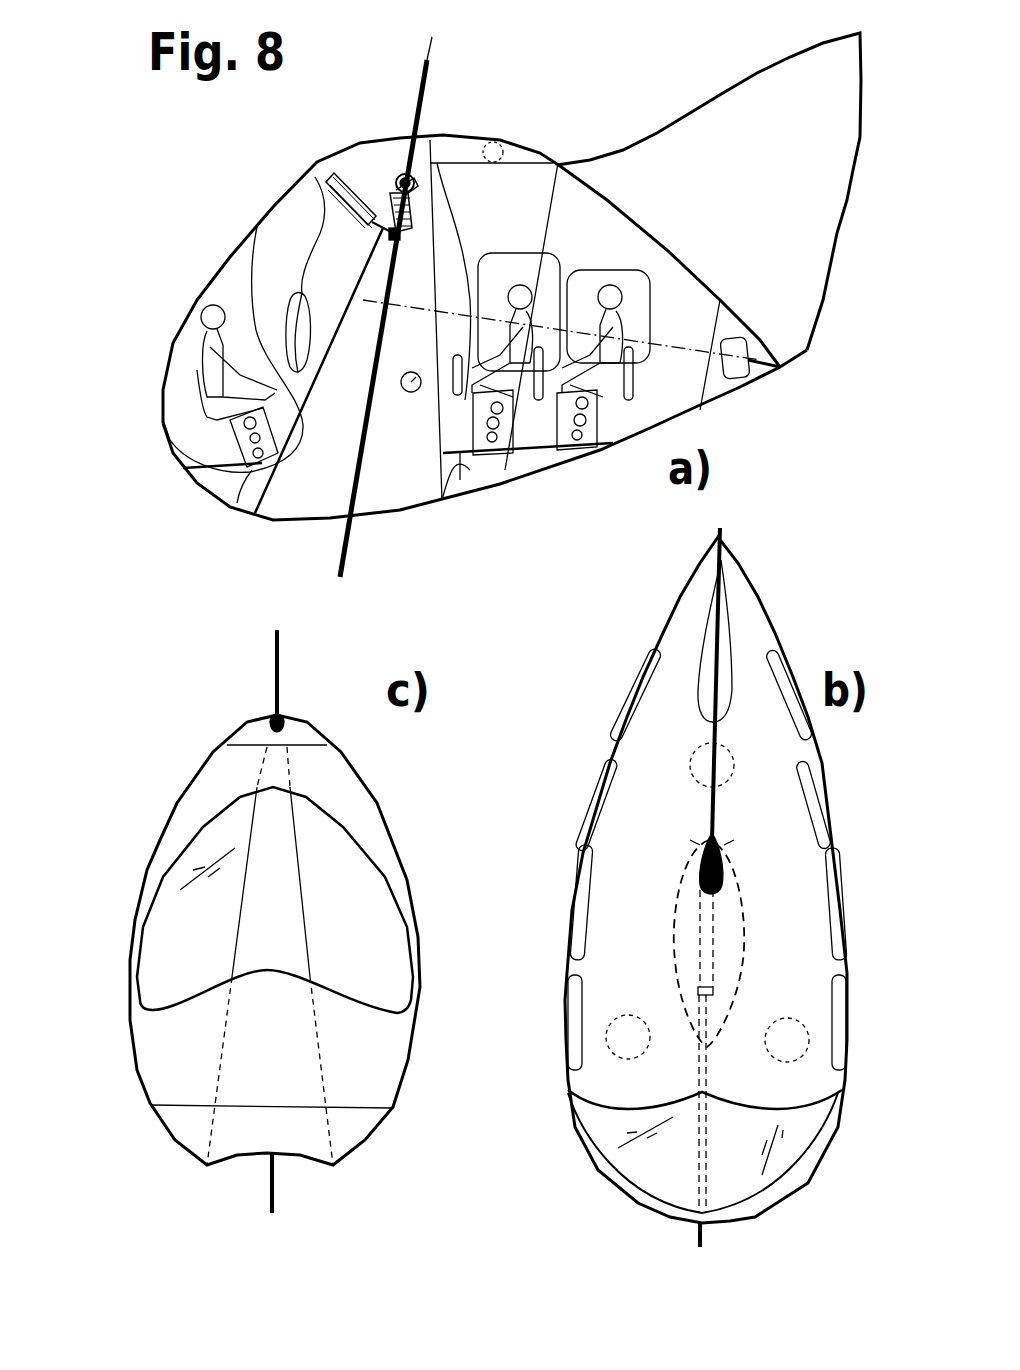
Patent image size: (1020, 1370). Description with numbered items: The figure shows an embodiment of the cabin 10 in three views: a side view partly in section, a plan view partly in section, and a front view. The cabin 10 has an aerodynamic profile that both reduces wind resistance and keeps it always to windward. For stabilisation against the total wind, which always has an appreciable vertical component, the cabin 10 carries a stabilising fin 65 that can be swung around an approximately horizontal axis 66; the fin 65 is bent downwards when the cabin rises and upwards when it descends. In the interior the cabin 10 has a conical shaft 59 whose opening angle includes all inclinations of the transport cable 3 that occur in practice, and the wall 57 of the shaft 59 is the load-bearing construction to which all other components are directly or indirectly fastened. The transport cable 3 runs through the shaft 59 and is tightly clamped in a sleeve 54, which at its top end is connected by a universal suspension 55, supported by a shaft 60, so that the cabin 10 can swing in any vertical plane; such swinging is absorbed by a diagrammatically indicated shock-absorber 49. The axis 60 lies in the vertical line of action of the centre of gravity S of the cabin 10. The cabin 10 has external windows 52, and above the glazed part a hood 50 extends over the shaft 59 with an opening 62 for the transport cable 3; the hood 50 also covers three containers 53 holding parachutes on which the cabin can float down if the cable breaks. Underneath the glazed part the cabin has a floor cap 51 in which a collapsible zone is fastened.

In FIG. 8a, the transport cable 3 is at (345, 515).
In FIG. 8c, the transport cable 3 is at (277, 685).
In FIG. 8a, the cabin 10 is at (273, 210).
In FIG. 8b, the cabin 10 is at (583, 860).
In FIG. 8c, the cabin 10 is at (145, 873).
In FIG. 8a, the shock-absorber 49 is at (333, 177).
In FIG. 8a, the hood 50 is at (510, 150).
In FIG. 8a, the floor cap 51 is at (473, 480).
In FIG. 8a, the external windows 52 is at (177, 387).
In FIG. 8a, the containers 53 is at (495, 147).
In FIG. 8b, the containers 53 is at (637, 1037).
In FIG. 8a, the sleeve 54 is at (397, 213).
In FIG. 8a, the universal suspension 55 is at (400, 200).
In FIG. 8a, the wall of the shaft 57 is at (300, 365).
In FIG. 8a, the conical shaft 59 is at (363, 300).
In FIG. 8b, the conical shaft 59 is at (742, 898).
In FIG. 8c, the conical shaft 59 is at (252, 830).
In FIG. 8a, the shaft (axis) 60 is at (468, 133).
In FIG. 8a, the opening 62 is at (403, 170).
In FIG. 8b, the opening 62 is at (722, 845).
In FIG. 8a, the stabilising fin 65 is at (697, 115).
In FIG. 8b, the stabilising fin 65 is at (722, 633).
In FIG. 8a, the horizontal axis 66 is at (780, 367).
In FIG. 8a, the centre of gravity S is at (401, 384).